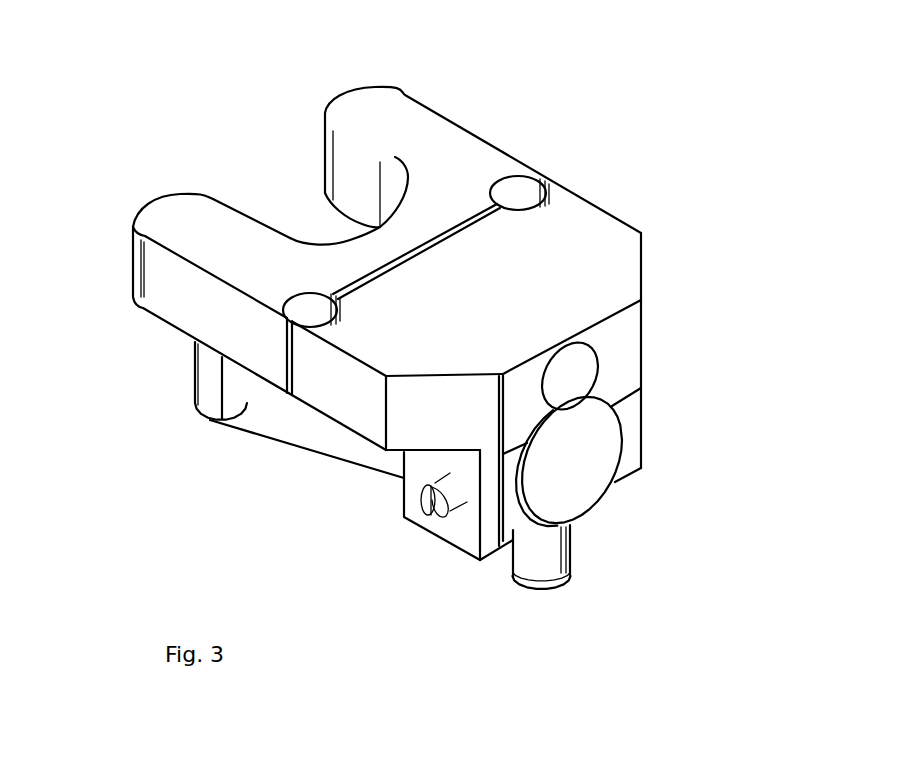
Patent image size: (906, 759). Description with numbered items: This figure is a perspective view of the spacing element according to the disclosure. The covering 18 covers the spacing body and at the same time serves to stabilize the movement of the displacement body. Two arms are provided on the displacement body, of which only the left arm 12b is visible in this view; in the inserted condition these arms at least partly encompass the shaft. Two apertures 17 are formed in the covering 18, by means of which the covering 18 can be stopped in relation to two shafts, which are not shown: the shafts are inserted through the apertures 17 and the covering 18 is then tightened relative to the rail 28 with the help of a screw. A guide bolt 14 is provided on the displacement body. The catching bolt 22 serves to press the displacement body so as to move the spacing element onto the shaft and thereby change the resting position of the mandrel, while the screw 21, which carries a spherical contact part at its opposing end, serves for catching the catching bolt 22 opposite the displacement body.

The left arm 12b is at (243, 410).
The guide bolt 14 is at (553, 560).
The apertures 17 is at (312, 303).
The covering 18 is at (427, 202).
The screw 21 is at (422, 507).
The catching bolt 22 is at (593, 443).
The rail 28 is at (573, 218).